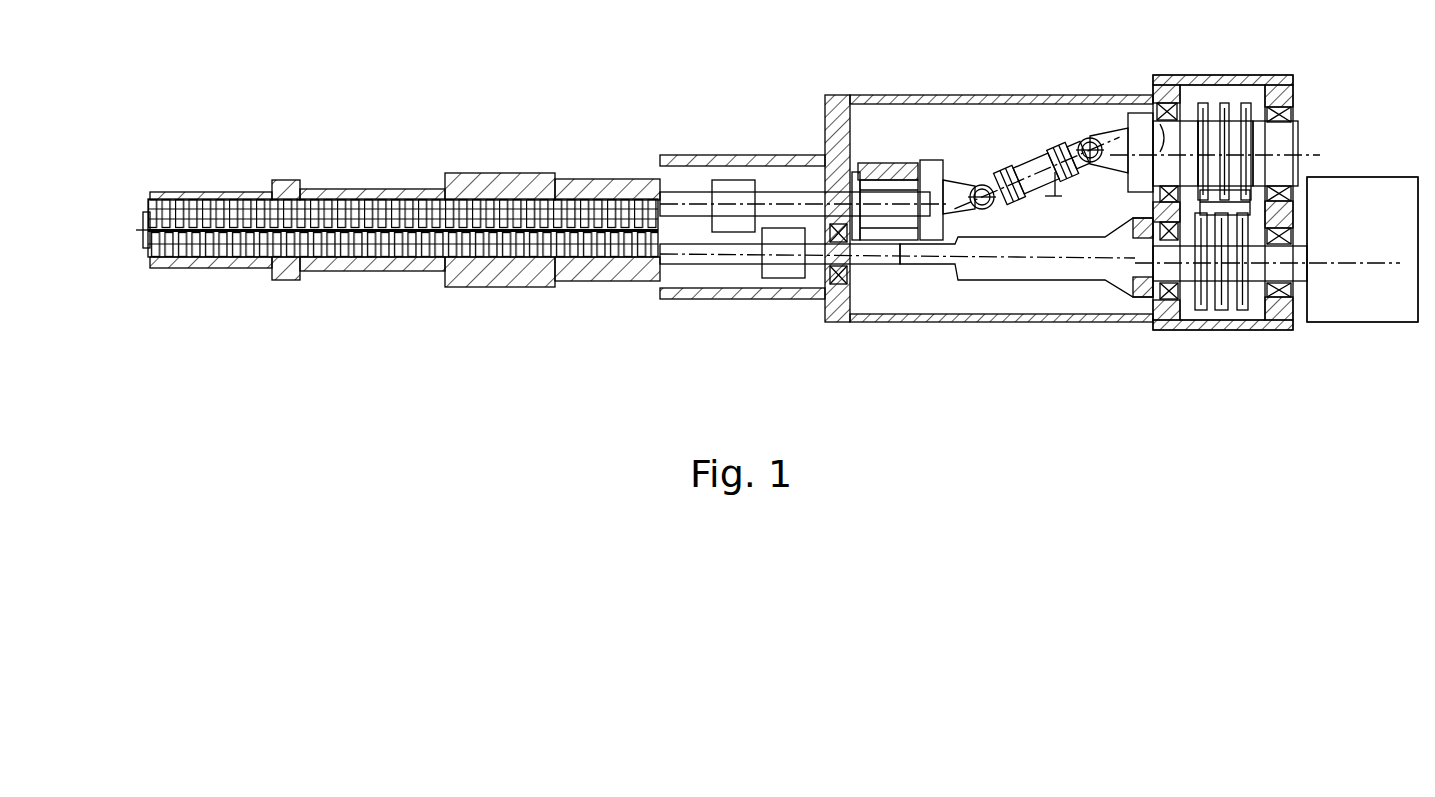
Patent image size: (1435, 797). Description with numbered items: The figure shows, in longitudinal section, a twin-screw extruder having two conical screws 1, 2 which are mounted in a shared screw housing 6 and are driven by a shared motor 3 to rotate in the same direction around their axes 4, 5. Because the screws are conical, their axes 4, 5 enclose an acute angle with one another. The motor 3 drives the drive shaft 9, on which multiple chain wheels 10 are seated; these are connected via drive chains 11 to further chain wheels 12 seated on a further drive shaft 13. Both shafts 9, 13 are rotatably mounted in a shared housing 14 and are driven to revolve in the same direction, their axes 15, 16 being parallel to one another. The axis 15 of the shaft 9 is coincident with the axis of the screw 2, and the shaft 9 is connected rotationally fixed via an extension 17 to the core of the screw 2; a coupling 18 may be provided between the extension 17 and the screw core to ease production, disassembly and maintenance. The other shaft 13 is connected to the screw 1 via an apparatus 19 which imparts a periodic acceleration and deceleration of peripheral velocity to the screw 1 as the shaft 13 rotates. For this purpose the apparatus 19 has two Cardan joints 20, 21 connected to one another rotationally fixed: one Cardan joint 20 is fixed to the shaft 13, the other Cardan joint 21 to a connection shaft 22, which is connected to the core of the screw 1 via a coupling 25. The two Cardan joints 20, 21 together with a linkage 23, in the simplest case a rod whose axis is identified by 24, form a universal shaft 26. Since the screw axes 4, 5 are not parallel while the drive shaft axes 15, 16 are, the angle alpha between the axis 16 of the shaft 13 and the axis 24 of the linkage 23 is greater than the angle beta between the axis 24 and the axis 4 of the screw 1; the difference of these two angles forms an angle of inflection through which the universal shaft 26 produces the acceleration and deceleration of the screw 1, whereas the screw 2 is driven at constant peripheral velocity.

The conical screw 1 is at (531, 172).
The conical screw 2 is at (390, 250).
The motor 3 is at (1320, 297).
The axis of screw 1 4 is at (796, 200).
The axis of screw 2 5 is at (672, 250).
The screw housing 6 is at (487, 172).
The drive shaft 9 is at (1277, 272).
The chain wheels 10 is at (1212, 300).
The drive chains 11 is at (1292, 187).
The chain wheels 12 is at (1237, 120).
The drive shaft 13 is at (1292, 113).
The housing 14 is at (930, 315).
The axis of shaft 9 15 is at (1347, 267).
The axis of shaft 13 16 is at (1302, 155).
The extension 17 is at (997, 258).
The coupling 18 is at (788, 260).
The apparatus 19 is at (1029, 135).
The Cardan joint 20 is at (1098, 140).
The Cardan joint 21 is at (976, 188).
The connection shaft 22 is at (890, 197).
The linkage 23 is at (1018, 170).
The axis of the linkage 24 is at (1040, 168).
The coupling 25 is at (730, 190).
The universal shaft 26 is at (1050, 212).